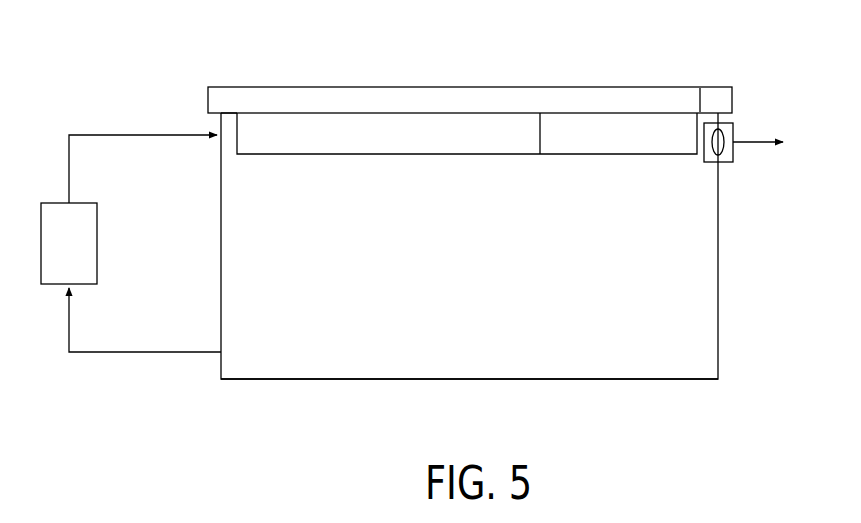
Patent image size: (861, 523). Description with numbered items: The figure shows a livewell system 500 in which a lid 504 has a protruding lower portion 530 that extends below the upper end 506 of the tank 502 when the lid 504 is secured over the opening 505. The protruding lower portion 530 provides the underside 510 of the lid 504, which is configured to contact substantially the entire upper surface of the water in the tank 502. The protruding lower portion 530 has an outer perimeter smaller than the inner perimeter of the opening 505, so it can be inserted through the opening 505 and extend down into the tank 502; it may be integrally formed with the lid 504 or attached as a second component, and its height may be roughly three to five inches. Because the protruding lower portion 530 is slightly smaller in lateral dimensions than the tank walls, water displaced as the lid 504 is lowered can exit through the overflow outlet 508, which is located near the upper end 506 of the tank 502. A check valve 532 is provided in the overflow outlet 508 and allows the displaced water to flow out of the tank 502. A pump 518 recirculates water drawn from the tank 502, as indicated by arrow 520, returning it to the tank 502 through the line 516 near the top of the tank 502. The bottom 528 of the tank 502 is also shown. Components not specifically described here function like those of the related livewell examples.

The livewell system 500 is at (727, 65).
The tank 502 is at (719, 295).
The lid 504 is at (372, 87).
The opening 505 is at (230, 124).
The upper end 506 is at (705, 106).
The overflow outlet 508 is at (726, 163).
The underside 510 is at (450, 158).
The supply line 516 is at (155, 135).
The pump 518 is at (98, 246).
The arrow 520 is at (145, 352).
The tank bottom 528 is at (501, 385).
The protruding lower portion 530 is at (543, 135).
The check valve 532 is at (723, 132).